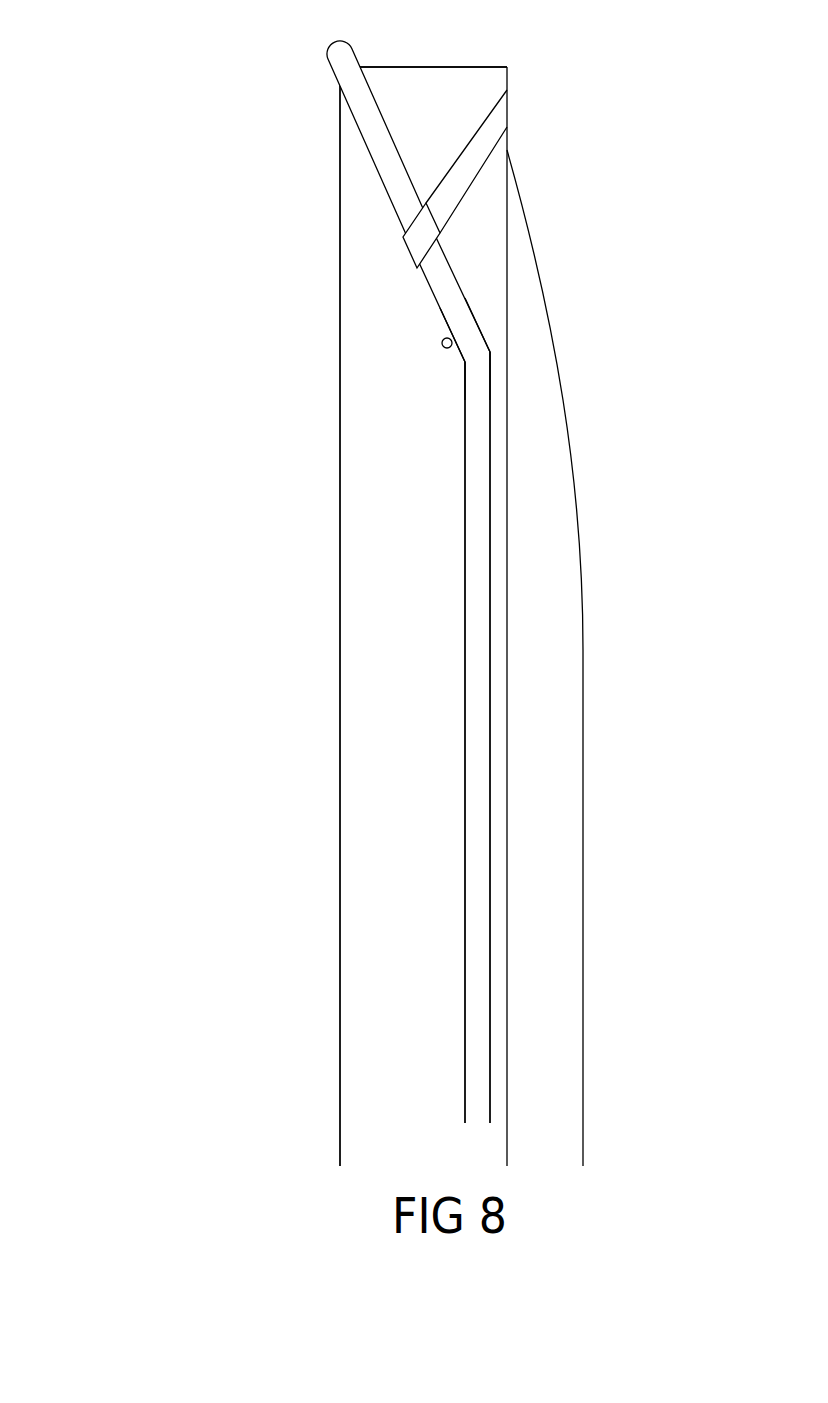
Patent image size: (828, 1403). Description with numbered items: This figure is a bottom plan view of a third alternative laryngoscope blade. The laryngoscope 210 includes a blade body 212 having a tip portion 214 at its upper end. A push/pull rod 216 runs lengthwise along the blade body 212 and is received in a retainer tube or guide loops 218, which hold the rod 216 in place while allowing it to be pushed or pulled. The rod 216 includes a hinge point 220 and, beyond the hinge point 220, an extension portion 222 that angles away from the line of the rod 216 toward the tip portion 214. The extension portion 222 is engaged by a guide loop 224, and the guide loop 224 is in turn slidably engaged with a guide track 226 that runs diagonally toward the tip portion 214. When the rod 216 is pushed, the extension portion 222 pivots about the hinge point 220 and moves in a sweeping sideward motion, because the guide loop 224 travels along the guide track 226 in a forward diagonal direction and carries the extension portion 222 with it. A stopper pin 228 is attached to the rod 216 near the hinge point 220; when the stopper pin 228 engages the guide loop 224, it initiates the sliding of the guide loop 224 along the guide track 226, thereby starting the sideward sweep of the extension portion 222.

The laryngoscope 210 is at (208, 547).
The blade body 212 is at (322, 677).
The tip portion 214 is at (444, 67).
The push/pull rod 216 is at (477, 873).
The retainer tube or guide loops 218 is at (466, 770).
The hinge point 220 is at (480, 362).
The extension portion 222 is at (346, 77).
The guide loop 224 is at (417, 243).
The guide track 226 is at (470, 163).
The stopper pin 228 is at (442, 345).